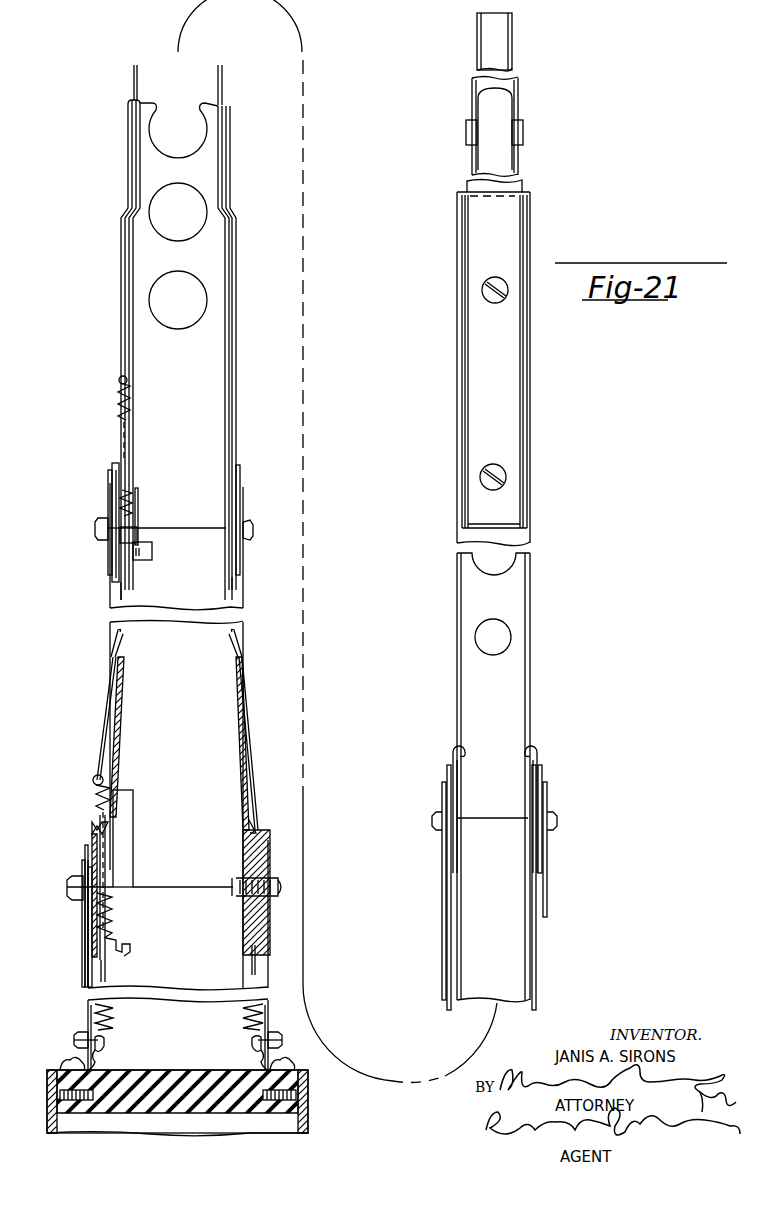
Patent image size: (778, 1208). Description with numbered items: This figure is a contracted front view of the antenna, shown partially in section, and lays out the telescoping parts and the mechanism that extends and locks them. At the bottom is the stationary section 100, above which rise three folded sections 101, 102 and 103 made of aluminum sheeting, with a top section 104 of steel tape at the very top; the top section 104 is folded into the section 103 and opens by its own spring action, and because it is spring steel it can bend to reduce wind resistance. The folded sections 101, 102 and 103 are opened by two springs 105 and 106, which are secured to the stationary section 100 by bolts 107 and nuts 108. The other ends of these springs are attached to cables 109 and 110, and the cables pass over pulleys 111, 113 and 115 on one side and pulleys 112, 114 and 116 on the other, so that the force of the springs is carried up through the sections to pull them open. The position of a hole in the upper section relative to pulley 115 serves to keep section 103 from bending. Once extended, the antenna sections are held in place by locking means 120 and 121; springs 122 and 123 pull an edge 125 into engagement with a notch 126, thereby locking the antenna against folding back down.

The stationary section 100 is at (272, 978).
The folded section 101 is at (244, 630).
The folded section 102 is at (232, 304).
The folded section 103 is at (533, 441).
The top section 104 is at (522, 103).
The spring 105 is at (106, 1025).
The spring 106 is at (240, 1015).
The bolt 107 is at (104, 1052).
The nut 108 is at (80, 1028).
The cable 109 is at (128, 151).
The cable 110 is at (225, 158).
The pulley 111 is at (92, 822).
The pulley 112 is at (250, 842).
The pulley 113 is at (112, 476).
The pulley 114 is at (238, 478).
The pulley 115 is at (443, 773).
The pulley 116 is at (545, 776).
The locking means 120 is at (88, 953).
The locking means 121 is at (112, 558).
The spring 122 is at (88, 918).
The spring 123 is at (118, 500).
The edge 125 is at (133, 528).
The notch 126 is at (128, 492).